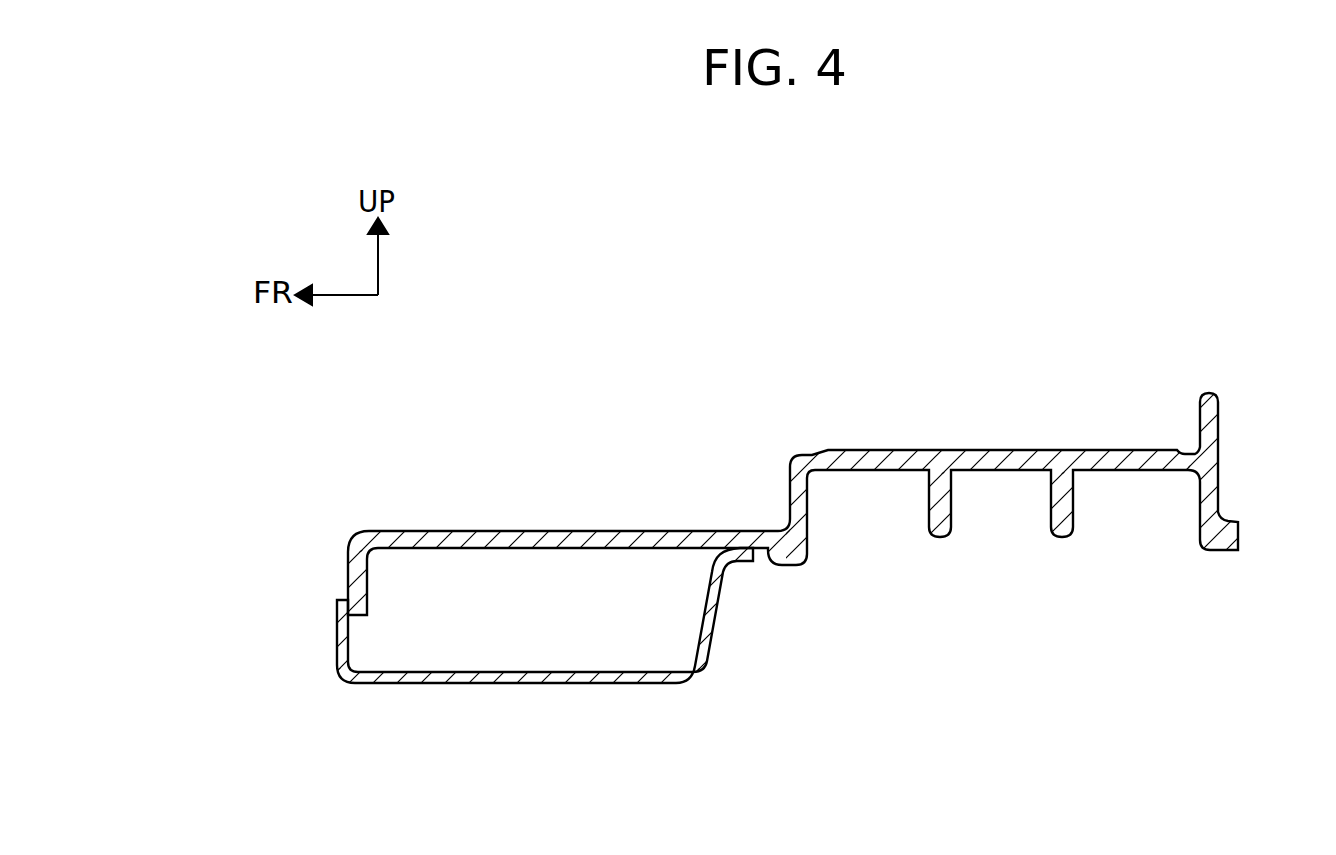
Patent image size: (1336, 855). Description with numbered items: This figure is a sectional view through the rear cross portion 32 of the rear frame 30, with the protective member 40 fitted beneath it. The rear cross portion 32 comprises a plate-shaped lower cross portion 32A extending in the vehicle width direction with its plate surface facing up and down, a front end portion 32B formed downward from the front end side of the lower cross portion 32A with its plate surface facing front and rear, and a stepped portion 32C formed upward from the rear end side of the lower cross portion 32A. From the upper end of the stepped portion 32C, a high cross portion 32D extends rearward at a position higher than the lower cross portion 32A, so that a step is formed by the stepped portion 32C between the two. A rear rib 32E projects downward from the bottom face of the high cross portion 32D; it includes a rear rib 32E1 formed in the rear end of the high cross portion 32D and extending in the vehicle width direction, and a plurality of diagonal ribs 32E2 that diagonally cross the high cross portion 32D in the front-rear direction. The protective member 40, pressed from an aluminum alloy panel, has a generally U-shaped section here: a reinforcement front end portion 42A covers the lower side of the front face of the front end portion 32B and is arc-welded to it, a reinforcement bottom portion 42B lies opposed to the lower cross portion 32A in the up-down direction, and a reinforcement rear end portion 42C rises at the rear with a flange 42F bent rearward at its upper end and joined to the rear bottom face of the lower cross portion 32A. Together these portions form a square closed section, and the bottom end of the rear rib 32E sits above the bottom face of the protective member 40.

The rear frame 30 is at (1262, 303).
The rear cross portion 32 is at (1160, 449).
The lower cross portion 32A is at (555, 531).
The front end portion 32B is at (348, 585).
The stepped portion 32C is at (790, 503).
The high cross portion 32D is at (1002, 450).
The rear rib 32E is at (1084, 533).
The rear rib 32E1 is at (1188, 507).
The diagonal ribs 32E2 is at (1050, 507).
The protective member 40 is at (575, 695).
The reinforcement front end portion 42A is at (337, 628).
The reinforcement bottom portion 42B is at (470, 684).
The reinforcement rear end portion 42C is at (718, 622).
The flange 42F is at (747, 566).